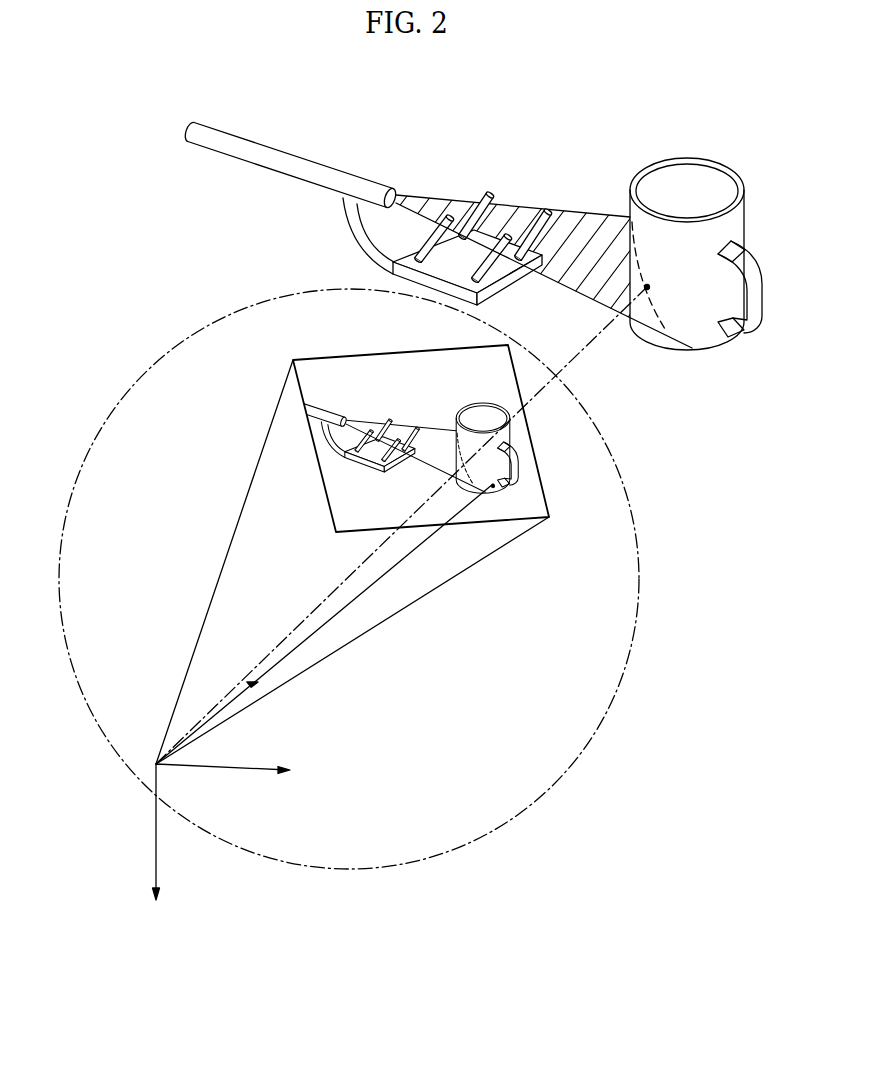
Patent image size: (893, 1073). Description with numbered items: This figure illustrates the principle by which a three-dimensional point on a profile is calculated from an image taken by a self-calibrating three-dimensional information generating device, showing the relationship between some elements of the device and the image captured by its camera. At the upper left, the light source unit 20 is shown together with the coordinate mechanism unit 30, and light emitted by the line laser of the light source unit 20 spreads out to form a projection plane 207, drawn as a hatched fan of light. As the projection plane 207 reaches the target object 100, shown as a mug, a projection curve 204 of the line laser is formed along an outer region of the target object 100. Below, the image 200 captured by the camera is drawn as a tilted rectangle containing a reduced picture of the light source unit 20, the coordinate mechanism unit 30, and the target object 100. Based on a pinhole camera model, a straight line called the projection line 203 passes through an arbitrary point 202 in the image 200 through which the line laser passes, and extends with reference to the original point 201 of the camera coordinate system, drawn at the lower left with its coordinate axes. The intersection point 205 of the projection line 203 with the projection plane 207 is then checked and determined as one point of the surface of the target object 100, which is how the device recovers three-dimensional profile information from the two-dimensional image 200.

The light source unit 20 is at (277, 158).
The coordinate mechanism unit 30 is at (390, 272).
The target object 100 is at (697, 158).
The image 200 is at (325, 363).
The original point of a camera coordinate system 201 is at (334, 630).
The arbitrary point 202 is at (493, 490).
The projection line 203 is at (544, 391).
The projection curve 204 is at (668, 336).
The intersection point 205 is at (647, 287).
The projection plane 207 is at (582, 222).